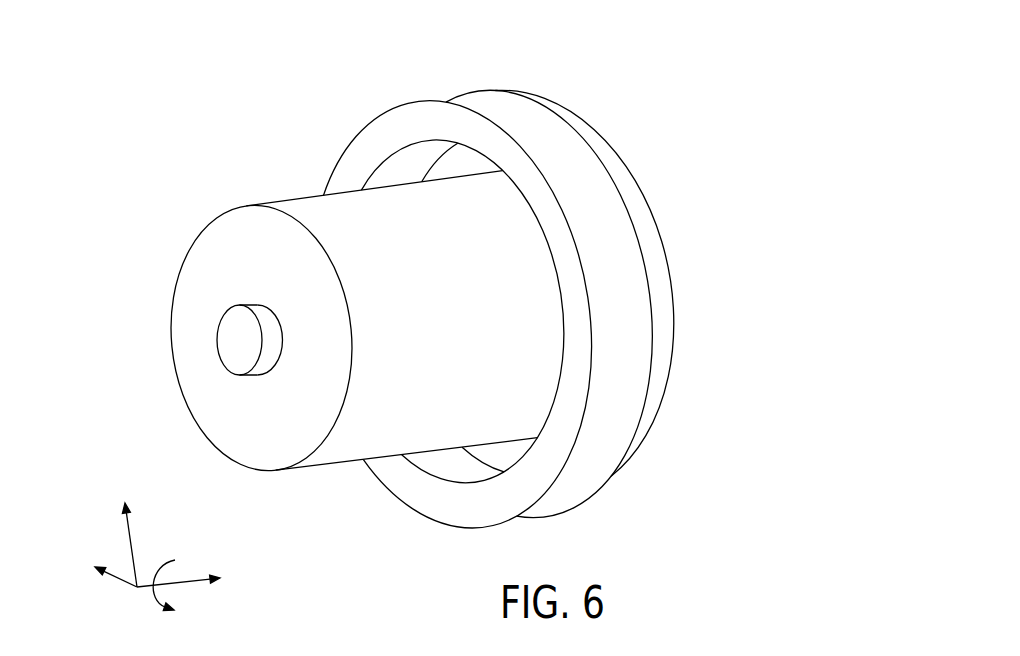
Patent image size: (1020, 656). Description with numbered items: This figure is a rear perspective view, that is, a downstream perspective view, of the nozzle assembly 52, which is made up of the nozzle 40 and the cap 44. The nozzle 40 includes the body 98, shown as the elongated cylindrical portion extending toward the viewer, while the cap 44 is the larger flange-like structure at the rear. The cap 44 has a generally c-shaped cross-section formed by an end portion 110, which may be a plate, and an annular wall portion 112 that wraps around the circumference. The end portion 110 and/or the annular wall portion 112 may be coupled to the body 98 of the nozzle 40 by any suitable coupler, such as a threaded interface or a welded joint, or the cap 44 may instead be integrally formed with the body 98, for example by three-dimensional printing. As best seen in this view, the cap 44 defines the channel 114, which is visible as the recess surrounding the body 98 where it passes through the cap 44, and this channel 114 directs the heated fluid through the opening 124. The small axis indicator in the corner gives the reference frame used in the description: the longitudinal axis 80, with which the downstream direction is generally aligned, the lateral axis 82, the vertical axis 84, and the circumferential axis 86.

The nozzle assembly 52 is at (569, 55).
The nozzle 40 is at (293, 203).
The body 98 is at (317, 207).
The opening 124 is at (380, 173).
The channel 114 is at (453, 163).
The cap 44 is at (547, 122).
The annular wall portion 112 is at (573, 165).
The end portion 110 is at (672, 284).
The longitudinal axis 80 is at (191, 585).
The lateral axis 82 is at (117, 585).
The vertical axis 84 is at (133, 553).
The circumferential axis 86 is at (170, 563).